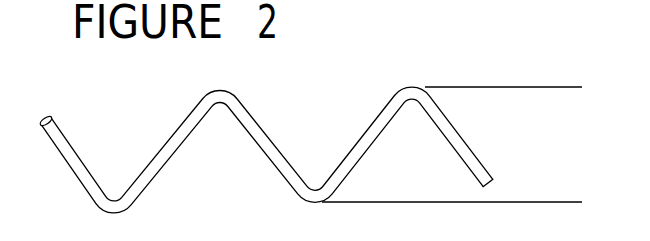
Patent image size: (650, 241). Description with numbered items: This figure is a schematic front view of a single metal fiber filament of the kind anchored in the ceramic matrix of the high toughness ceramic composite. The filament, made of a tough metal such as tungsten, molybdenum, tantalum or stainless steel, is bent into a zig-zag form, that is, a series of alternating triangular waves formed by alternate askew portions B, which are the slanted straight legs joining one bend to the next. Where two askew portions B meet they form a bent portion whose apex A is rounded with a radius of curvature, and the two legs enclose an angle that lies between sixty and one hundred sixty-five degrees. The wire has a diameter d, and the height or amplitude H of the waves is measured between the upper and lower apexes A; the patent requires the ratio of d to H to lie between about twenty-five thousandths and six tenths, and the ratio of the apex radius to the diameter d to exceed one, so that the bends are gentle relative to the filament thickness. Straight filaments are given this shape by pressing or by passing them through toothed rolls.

The apex of the bent portion A is at (412, 86).
The askew portion B is at (262, 152).
The diameter of the fiber filament d is at (436, 151).
The height or amplitude of the waves H is at (563, 88).